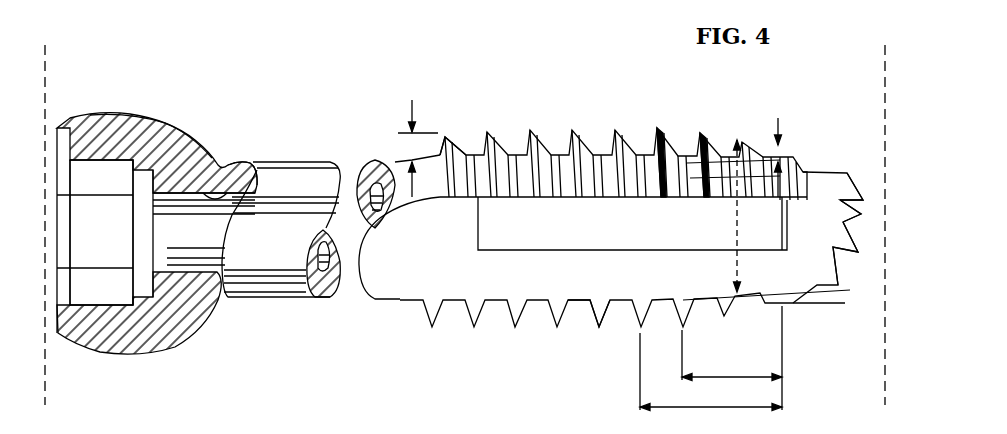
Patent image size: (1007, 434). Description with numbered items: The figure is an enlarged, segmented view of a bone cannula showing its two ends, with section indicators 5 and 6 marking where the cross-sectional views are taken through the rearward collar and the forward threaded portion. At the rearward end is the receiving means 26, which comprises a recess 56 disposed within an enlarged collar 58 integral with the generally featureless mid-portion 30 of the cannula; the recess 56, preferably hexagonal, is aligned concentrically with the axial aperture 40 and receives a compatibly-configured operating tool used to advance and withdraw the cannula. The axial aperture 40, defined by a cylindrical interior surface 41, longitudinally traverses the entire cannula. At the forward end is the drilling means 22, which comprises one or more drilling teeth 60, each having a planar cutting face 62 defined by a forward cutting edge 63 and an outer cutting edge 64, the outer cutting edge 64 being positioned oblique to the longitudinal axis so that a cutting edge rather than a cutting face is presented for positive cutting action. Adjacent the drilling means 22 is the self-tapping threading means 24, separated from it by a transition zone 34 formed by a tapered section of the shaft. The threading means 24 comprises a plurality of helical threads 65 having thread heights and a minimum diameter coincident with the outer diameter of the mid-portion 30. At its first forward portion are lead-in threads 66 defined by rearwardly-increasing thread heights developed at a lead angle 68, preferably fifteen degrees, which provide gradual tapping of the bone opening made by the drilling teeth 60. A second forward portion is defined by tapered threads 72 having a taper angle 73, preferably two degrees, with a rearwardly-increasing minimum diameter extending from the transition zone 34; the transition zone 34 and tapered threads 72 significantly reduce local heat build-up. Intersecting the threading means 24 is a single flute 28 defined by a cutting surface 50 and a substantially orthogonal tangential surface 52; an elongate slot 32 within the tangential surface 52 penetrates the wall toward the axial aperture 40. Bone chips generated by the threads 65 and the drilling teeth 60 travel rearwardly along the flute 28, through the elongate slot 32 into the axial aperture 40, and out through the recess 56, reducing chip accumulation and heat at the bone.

The section line 5- 5 is at (112, 408).
The section line 6- 6 is at (822, 408).
The drilling means 22 is at (621, 258).
The self-tapping threading means 24 is at (538, 133).
The receiving means 26 is at (100, 112).
The flute 28 is at (523, 285).
The mid-portion 30 is at (303, 160).
The elongate slot 32 is at (587, 238).
The transition zone 34 is at (800, 165).
The axial aperture 40 is at (323, 260).
The cylindrical interior surface 41 is at (216, 166).
The cutting surface 50 is at (406, 212).
The tangential surface 52 is at (597, 287).
The recess 56 is at (108, 290).
The enlarged collar 58 is at (165, 117).
The drilling teeth 60 is at (837, 173).
The planar cutting face 62 is at (858, 214).
The forward cutting edge 63 is at (864, 201).
The outer cutting edge 64 is at (840, 210).
The helical threads 65 is at (446, 134).
The lead-in threads 66 is at (711, 382).
The lead angle 68 is at (812, 313).
The tapered threads 72 is at (732, 358).
The taper angle 73 is at (705, 153).